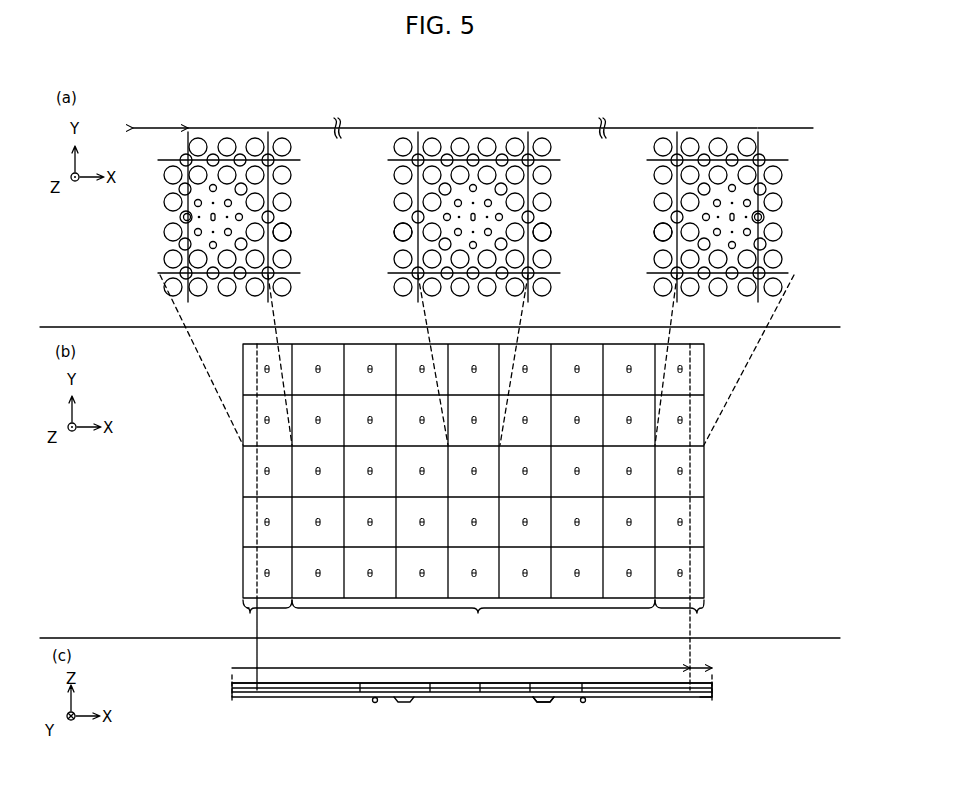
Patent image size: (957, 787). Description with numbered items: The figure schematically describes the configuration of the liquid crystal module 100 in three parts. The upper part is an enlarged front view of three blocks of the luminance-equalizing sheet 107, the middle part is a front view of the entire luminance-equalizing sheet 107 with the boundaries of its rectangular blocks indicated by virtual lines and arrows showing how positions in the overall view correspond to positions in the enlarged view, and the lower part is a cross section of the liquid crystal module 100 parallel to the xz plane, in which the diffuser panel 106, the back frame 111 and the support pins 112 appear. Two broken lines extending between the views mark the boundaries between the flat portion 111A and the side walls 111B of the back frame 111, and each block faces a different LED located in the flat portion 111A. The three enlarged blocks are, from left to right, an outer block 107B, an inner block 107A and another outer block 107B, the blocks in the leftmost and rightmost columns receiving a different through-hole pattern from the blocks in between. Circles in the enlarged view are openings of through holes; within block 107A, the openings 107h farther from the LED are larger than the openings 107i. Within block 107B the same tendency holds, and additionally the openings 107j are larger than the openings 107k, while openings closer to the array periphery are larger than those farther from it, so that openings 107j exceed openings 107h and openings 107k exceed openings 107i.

The liquid crystal module 100 is at (722, 704).
The diffuser panel 106 is at (232, 684).
The luminance-equalizing sheet 107 is at (704, 578).
The block 107A is at (473, 617).
The block 107B is at (467, 617).
The opening 107h is at (429, 232).
The opening 107i is at (435, 189).
The opening 107j is at (165, 249).
The opening 107k is at (180, 195).
The back frame 111 is at (250, 698).
The flat portion 111A is at (476, 127).
The side walls 111B is at (155, 127).
The support pins 112 is at (472, 700).